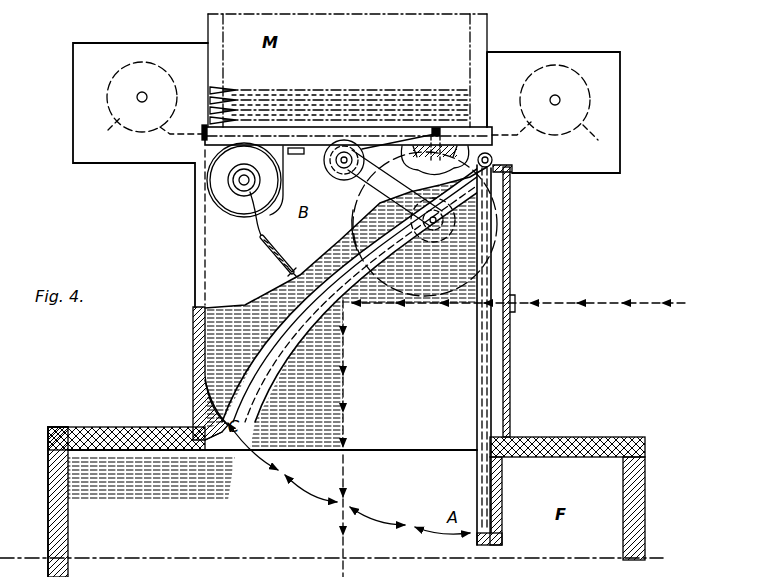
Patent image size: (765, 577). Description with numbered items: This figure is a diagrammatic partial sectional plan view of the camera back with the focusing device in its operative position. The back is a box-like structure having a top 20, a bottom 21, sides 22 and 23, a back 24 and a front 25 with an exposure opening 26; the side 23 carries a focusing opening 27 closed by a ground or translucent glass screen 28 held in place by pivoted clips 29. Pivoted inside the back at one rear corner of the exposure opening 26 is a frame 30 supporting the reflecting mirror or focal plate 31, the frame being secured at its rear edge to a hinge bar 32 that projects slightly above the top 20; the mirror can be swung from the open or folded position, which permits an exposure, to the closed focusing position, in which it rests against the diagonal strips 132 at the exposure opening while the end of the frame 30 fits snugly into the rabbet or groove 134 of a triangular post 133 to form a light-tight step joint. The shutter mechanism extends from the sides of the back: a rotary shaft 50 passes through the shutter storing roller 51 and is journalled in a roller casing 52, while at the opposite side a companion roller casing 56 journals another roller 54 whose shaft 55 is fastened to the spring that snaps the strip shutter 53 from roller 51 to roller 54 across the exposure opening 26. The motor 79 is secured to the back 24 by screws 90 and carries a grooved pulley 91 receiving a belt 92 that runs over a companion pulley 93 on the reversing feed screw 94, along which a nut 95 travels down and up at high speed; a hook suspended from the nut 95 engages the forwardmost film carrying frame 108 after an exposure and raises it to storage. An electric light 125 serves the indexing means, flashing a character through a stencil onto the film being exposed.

The top 20 is at (221, 227).
The bottom 21 is at (355, 295).
The side 22 is at (192, 355).
The side 23 is at (511, 410).
The back 24 is at (492, 128).
The front 25 is at (577, 437).
The exposure opening 26 is at (410, 445).
The focusing opening 27 is at (497, 410).
The ground or translucent glass screen 28 is at (510, 355).
The pivoted clips 29 is at (514, 302).
The frame 30 is at (283, 364).
The reflecting mirror or focal plate 31 is at (257, 390).
The hinge bar 32 is at (493, 158).
The rotary shaft 50 is at (560, 99).
The shutter storing roller 51 is at (550, 138).
The roller casing 52 is at (616, 160).
The strip shutter 53 is at (308, 175).
The roller 54 is at (145, 132).
The shaft 55 is at (137, 97).
The companion roller casing 56 is at (132, 93).
The motor 79 is at (357, 221).
The screws 90 is at (438, 127).
The grooved pulley 91 is at (431, 247).
The belt 92 is at (395, 188).
The companion pulley 93 is at (330, 160).
The reversing feed screw 94 is at (345, 169).
The nut 95 is at (350, 155).
The film carrying frame 108 is at (313, 103).
The electric light 125 is at (232, 205).
The diagonal strips 132 is at (280, 354).
The triangular post 133 is at (210, 407).
The rabbet or groove 134 is at (212, 432).